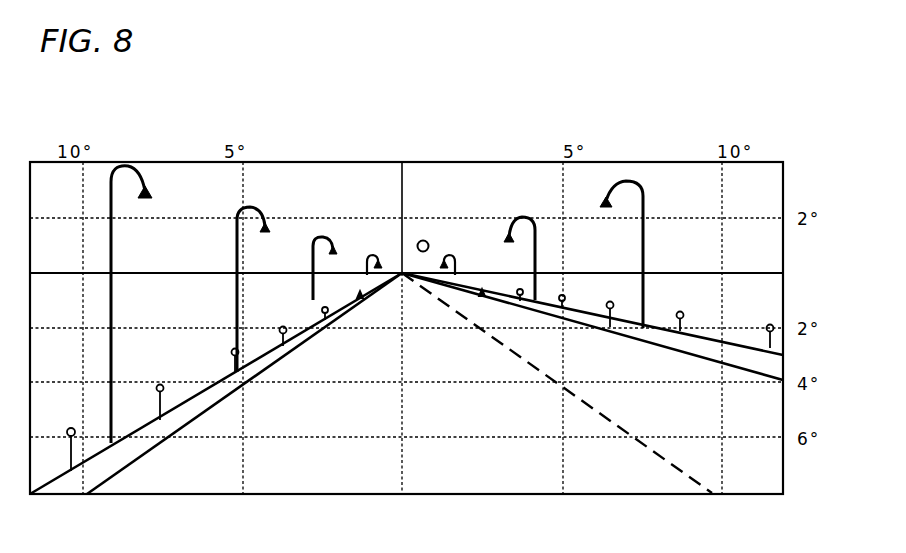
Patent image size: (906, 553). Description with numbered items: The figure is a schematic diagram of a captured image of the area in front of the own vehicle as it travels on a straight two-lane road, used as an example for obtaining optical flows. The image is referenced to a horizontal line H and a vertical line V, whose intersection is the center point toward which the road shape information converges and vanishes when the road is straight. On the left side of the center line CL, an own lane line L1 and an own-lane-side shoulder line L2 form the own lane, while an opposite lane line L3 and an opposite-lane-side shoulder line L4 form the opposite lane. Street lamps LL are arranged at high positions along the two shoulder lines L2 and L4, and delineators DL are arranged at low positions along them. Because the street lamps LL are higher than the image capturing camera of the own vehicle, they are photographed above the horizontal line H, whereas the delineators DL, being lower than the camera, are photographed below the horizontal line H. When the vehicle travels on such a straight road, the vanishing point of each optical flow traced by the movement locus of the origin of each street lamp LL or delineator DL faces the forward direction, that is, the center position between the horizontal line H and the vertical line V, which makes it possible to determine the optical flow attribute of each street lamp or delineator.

The street lamps LL is at (333, 250).
The own lane line L1 is at (124, 470).
The own-lane-side shoulder line L2 is at (60, 478).
The opposite lane line L3 is at (764, 378).
The opposite-lane-side shoulder line L4 is at (740, 350).
The delineators DL is at (172, 383).
The center line CL is at (656, 457).
The vertical line V is at (399, 318).
The horizontal line H is at (420, 274).